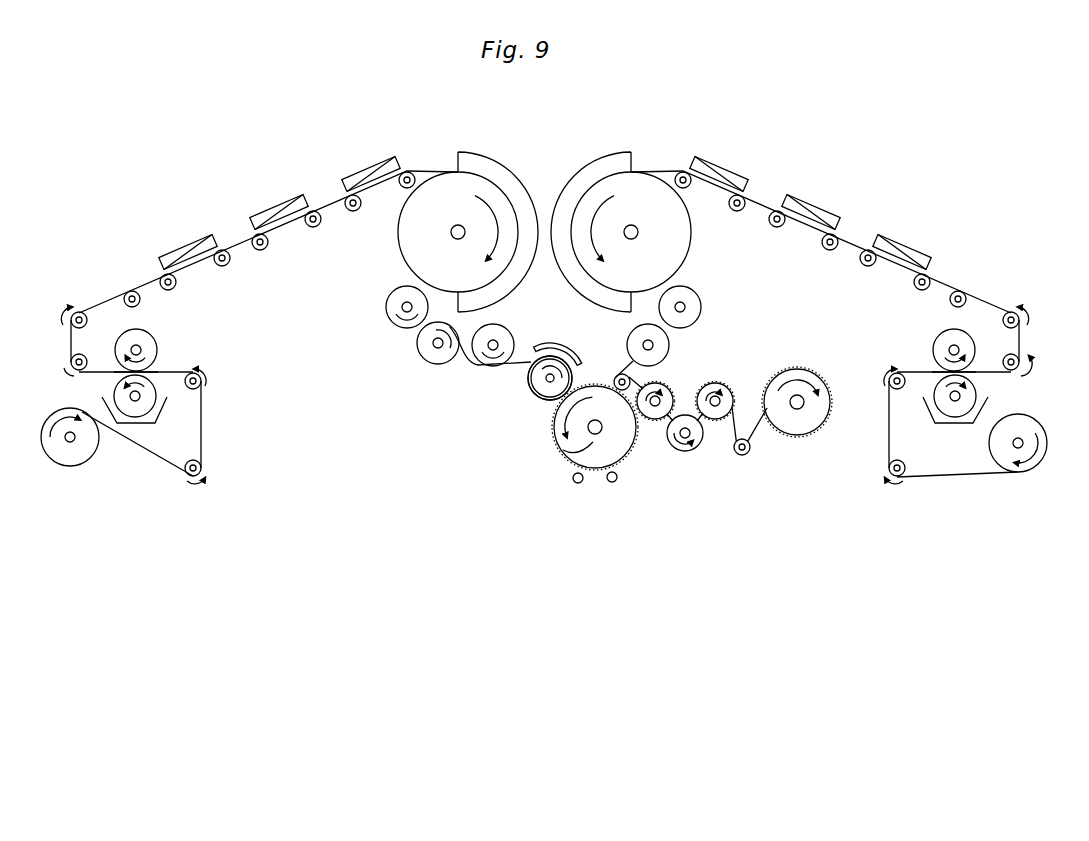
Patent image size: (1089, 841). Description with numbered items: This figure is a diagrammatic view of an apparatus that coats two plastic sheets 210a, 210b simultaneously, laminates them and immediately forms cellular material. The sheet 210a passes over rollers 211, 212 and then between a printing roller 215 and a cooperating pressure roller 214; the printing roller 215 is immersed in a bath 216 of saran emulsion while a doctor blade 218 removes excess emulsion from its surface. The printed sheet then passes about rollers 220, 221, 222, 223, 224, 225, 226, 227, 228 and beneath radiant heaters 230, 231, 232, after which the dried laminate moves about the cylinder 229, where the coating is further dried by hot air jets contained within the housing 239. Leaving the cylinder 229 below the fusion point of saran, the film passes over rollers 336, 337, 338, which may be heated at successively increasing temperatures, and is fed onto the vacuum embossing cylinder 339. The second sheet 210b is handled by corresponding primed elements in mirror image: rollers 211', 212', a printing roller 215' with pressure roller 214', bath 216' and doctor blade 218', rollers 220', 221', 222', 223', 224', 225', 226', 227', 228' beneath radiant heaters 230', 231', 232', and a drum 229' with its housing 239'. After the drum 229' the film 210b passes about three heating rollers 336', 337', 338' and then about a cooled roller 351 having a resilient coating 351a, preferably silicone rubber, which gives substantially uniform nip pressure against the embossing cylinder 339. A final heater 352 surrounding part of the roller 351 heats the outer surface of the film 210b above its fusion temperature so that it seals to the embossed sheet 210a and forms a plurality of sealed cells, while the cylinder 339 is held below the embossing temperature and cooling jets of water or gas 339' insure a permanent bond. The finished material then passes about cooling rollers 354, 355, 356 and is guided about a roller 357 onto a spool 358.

The plastic sheet 210a is at (992, 475).
The plastic sheet 210b is at (158, 457).
The roller 211 is at (889, 493).
The roller 211' is at (228, 466).
The roller 212 is at (872, 396).
The roller 212' is at (226, 375).
The pressure roller 214 is at (935, 341).
The pressure roller 214' is at (169, 346).
The printing roller 215 is at (991, 396).
The printing roller 215' is at (95, 396).
The bath 216 is at (955, 432).
The bath 216' is at (154, 425).
The doctor blade 218 is at (929, 360).
The doctor blade 218' is at (177, 359).
The roller 220 is at (1040, 354).
The roller 220' is at (44, 368).
The roller 221 is at (1043, 320).
The roller 221' is at (68, 303).
The roller 222 is at (980, 283).
The roller 222' is at (118, 277).
The roller 223 is at (890, 298).
The roller 223' is at (194, 297).
The roller 224 is at (843, 276).
The roller 224' is at (241, 276).
The roller 225 is at (804, 258).
The roller 225' is at (281, 256).
The roller 226 is at (762, 238).
The roller 226' is at (326, 234).
The roller 227 is at (721, 219).
The roller 227' is at (367, 217).
The roller 228 is at (705, 195).
The roller 228' is at (426, 157).
The cylinder 229 is at (631, 232).
The drum 229' is at (458, 232).
The radiant heater 230 is at (906, 241).
The radiant heater 230' is at (187, 235).
The radiant heater 231 is at (815, 200).
The radiant heater 231' is at (278, 196).
The radiant heater 232 is at (724, 160).
The radiant heater 232' is at (365, 161).
The housing 239 is at (591, 218).
The housing 239' is at (498, 217).
The roller 336 is at (707, 304).
The heating roller 336' is at (379, 302).
The roller 337 is at (683, 345).
The heating roller 337' is at (431, 363).
The roller 338 is at (609, 363).
The heating roller 338' is at (511, 331).
The vacuum embossing cylinder 339 is at (571, 429).
The cooling jets 339' is at (595, 501).
The cooled roller 351 is at (547, 398).
The resilient coating 351a is at (530, 383).
The final heater 352 is at (575, 337).
The cooling roller 354 is at (685, 377).
The cooling roller 355 is at (682, 452).
The cooling roller 356 is at (748, 377).
The roller 357 is at (748, 447).
The spool 358 is at (803, 427).